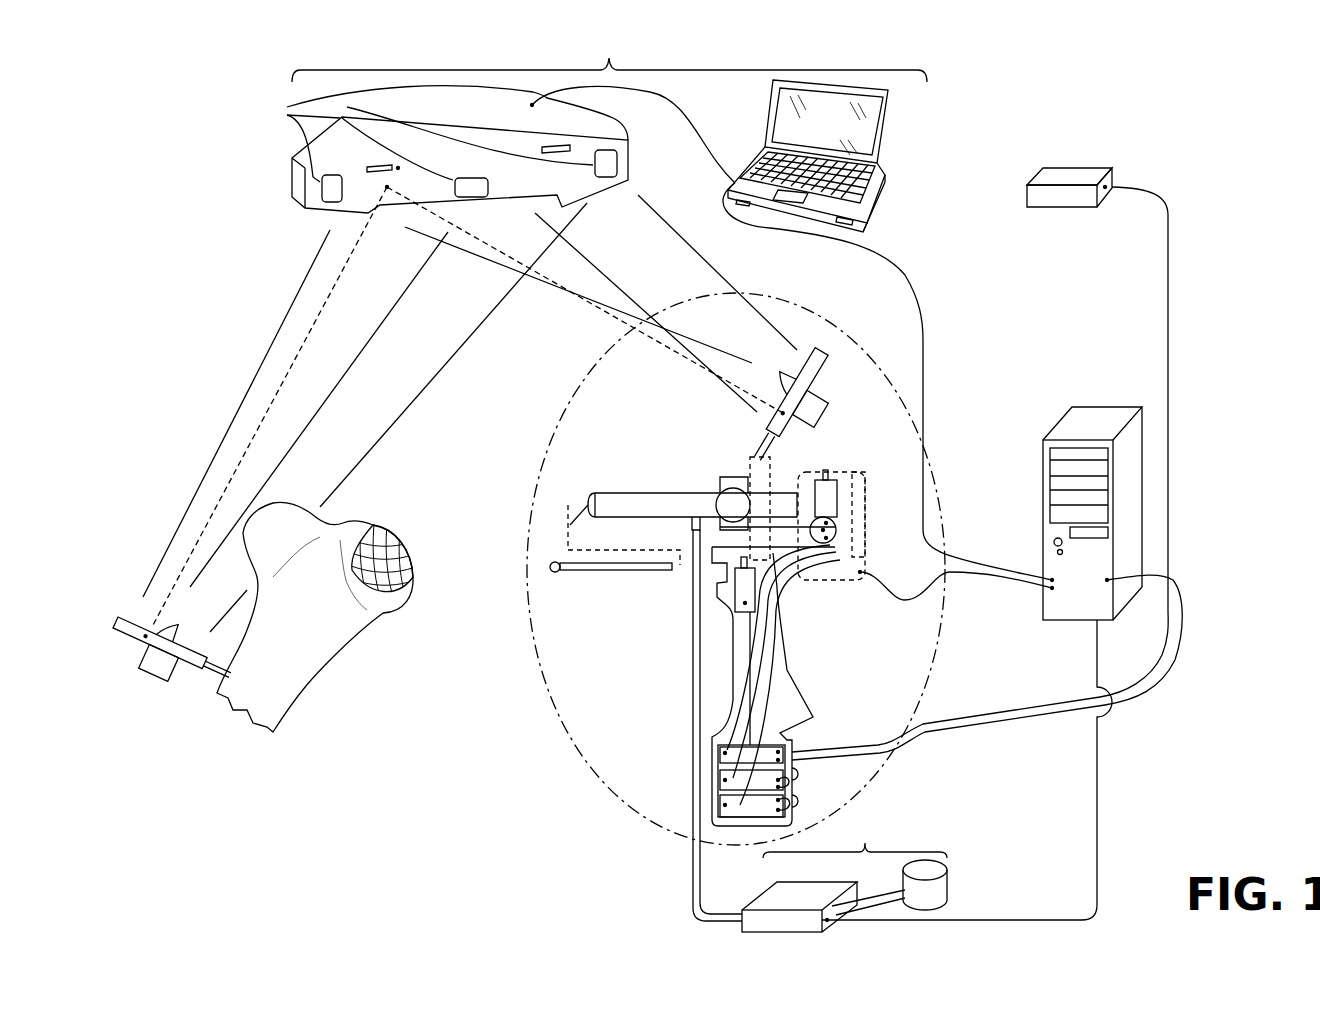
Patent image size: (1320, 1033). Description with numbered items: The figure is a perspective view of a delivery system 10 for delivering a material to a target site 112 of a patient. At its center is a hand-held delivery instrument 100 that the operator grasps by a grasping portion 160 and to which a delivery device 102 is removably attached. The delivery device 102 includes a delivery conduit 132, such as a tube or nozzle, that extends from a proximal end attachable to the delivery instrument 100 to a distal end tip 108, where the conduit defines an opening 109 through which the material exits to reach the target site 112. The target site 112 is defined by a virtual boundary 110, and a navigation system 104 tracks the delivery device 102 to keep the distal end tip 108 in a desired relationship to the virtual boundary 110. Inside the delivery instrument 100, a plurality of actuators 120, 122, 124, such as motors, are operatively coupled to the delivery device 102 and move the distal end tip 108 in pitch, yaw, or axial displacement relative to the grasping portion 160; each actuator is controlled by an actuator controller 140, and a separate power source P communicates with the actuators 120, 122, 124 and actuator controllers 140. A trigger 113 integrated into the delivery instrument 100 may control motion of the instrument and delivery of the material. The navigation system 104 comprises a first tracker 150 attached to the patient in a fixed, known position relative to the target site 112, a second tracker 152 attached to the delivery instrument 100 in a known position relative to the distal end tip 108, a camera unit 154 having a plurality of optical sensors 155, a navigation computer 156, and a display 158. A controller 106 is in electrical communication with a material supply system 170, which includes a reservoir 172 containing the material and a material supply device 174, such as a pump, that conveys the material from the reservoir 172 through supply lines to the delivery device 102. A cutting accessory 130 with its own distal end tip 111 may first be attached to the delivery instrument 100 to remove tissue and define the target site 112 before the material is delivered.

The delivery system 10 is at (1170, 125).
The delivery instrument 100 is at (818, 657).
The delivery device 102 is at (630, 480).
The navigation system 104 is at (609, 57).
The controller 106 is at (1133, 485).
The distal end tip 108 is at (588, 503).
The opening 109 is at (570, 525).
The virtual boundary 110 is at (370, 524).
The distal end tip 111 is at (553, 572).
The target site 112 is at (412, 547).
The trigger 113 is at (715, 585).
The actuator 120 is at (832, 478).
The actuator 122 is at (838, 540).
The actuator 124 is at (745, 588).
The cutting accessory 130 is at (612, 580).
The delivery conduit 132 is at (670, 500).
The actuator controller 140 is at (725, 780).
The first tracker 150 is at (112, 613).
The second tracker 152 is at (808, 350).
The camera unit 154 is at (283, 187).
The optical sensors 155 is at (294, 141).
The navigation computer 156 is at (905, 132).
The display 158 is at (843, 136).
The grasping portion 160 is at (730, 647).
The material supply system 170 is at (855, 839).
The reservoir 172 is at (943, 893).
The material supply device 174 is at (772, 927).
The power source P is at (1060, 168).